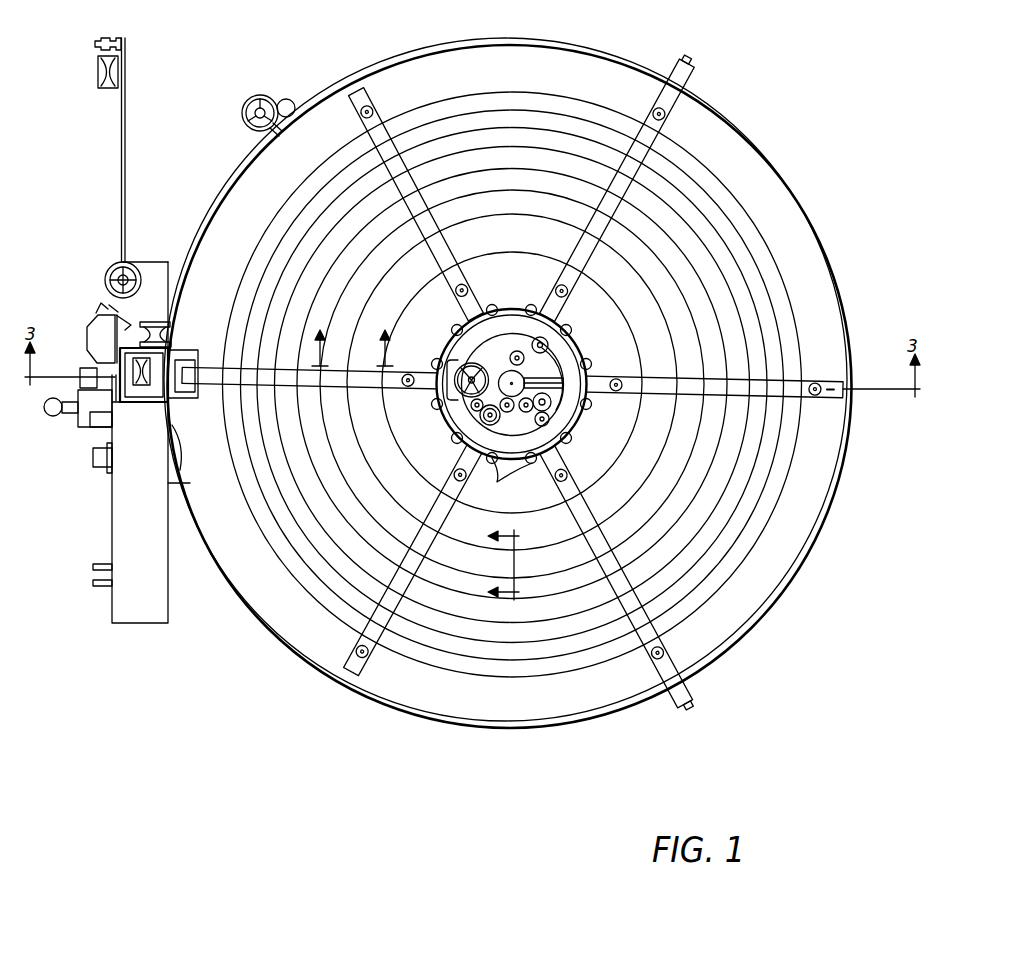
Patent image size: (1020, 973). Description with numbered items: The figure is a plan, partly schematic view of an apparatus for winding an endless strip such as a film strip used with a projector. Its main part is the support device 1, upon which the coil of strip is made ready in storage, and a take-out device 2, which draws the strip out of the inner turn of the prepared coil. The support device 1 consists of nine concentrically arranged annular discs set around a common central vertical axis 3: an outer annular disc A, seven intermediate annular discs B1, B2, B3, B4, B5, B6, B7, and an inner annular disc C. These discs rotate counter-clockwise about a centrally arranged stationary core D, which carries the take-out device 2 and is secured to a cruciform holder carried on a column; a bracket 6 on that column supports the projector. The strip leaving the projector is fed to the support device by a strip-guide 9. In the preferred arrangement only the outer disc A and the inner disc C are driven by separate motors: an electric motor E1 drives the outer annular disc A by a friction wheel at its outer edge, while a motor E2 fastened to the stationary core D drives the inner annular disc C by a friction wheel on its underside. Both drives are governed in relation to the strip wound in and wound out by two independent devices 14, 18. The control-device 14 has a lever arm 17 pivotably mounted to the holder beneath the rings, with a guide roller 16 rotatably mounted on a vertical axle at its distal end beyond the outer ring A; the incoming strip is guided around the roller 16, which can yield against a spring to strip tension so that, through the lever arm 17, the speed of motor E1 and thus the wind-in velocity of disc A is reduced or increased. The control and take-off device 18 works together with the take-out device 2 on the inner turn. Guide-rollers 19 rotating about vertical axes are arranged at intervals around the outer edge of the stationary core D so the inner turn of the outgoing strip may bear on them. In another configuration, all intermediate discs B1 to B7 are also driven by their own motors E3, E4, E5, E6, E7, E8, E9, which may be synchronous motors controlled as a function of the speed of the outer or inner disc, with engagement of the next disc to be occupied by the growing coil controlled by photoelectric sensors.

The support device 1 is at (267, 688).
The take-out device 2 is at (459, 403).
The central vertical axis 3 is at (511, 370).
The control-device 14 is at (242, 96).
The guide roller 16 is at (262, 99).
The lever arm 17 is at (265, 140).
The control and take-off device 18 is at (563, 402).
The guide-rollers 19 is at (512, 473).
The bracket 6 is at (494, 566).
The strip-guide 9 is at (352, 338).
The outer annular disc A is at (512, 368).
The intermediate annular disc B1 is at (512, 368).
The intermediate annular disc B2 is at (512, 370).
The intermediate annular disc B3 is at (512, 373).
The intermediate annular disc B4 is at (512, 372).
The intermediate annular disc B5 is at (512, 374).
The intermediate annular disc B6 is at (512, 376).
The intermediate annular disc B7 is at (512, 376).
The inner annular disc C is at (512, 367).
The stationary core D is at (513, 385).
The electric motor E1 is at (793, 592).
The motor E2 is at (395, 300).
The motor E3 is at (610, 248).
The motor E4 is at (650, 245).
The motor E5 is at (698, 270).
The motor E6 is at (737, 295).
The motor E7 is at (762, 332).
The motor E8 is at (787, 438).
The motor E9 is at (788, 490).